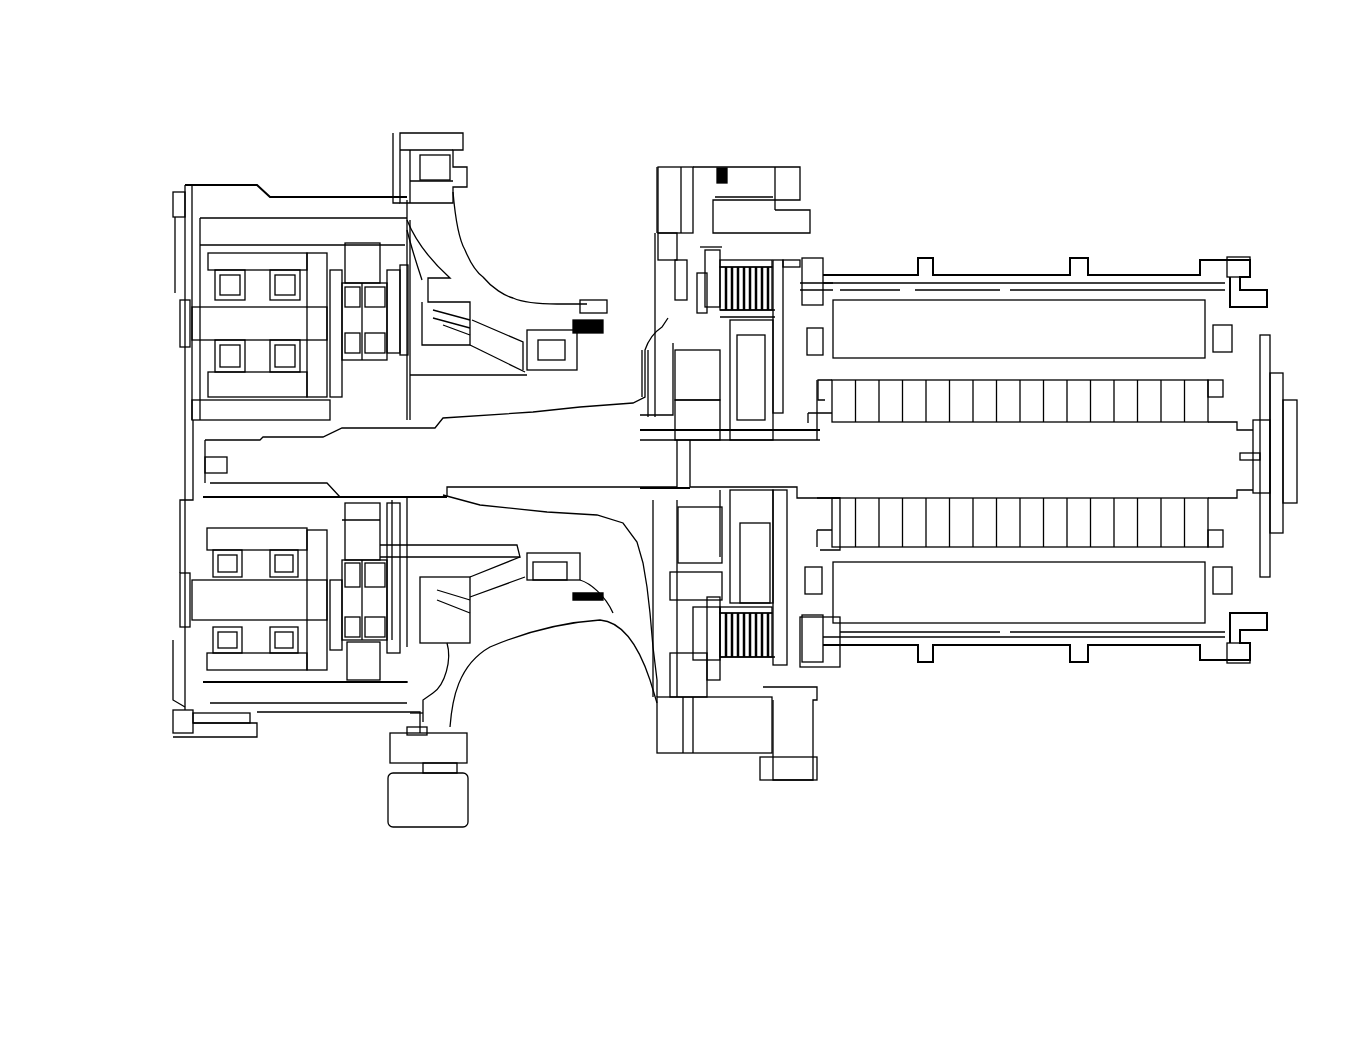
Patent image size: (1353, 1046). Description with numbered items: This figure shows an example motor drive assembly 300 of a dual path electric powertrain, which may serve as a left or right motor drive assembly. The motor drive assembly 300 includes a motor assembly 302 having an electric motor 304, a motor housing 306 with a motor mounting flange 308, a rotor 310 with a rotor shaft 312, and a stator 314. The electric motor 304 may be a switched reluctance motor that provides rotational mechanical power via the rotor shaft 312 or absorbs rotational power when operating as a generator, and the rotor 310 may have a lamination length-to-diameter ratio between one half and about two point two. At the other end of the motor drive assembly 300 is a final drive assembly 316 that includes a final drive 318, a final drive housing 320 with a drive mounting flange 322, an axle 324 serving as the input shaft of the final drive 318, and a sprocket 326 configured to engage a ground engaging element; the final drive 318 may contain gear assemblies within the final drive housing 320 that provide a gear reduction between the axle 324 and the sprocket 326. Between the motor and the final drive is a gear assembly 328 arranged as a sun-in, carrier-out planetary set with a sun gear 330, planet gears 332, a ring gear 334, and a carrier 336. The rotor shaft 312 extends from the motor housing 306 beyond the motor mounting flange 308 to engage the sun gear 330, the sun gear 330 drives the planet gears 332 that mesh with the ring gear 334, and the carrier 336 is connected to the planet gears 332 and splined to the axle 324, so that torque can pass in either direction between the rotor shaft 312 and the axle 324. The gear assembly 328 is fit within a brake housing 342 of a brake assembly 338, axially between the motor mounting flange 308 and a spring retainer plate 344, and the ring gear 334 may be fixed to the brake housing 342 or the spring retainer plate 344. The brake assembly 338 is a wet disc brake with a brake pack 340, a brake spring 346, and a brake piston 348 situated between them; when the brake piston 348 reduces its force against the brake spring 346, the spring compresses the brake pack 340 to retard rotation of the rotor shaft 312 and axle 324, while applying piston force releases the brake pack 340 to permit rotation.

The motor drive assembly 300 is at (175, 83).
The motor assembly 302 is at (772, 797).
The electric motor 304 is at (1150, 250).
The motor housing 306 is at (1047, 275).
The motor mounting flange 308 is at (797, 192).
The rotor 310 is at (1250, 385).
The rotor shaft 312 is at (1030, 465).
The stator 314 is at (1019, 461).
The final drive assembly 316 is at (175, 137).
The final drive 318 is at (150, 692).
The final drive housing 320 is at (293, 723).
The drive mounting flange 322 is at (668, 757).
The axle 324 is at (441, 507).
The sprocket 326 is at (405, 812).
The gear assembly 328 is at (752, 368).
The sun gear 330 is at (703, 495).
The planet gears 332 is at (702, 360).
The ring gear 334 is at (703, 337).
The carrier 336 is at (665, 500).
The brake assembly 338 is at (683, 140).
The brake pack 340 is at (740, 675).
The brake housing 342 is at (757, 181).
The spring retainer plate 344 is at (684, 755).
The brake spring 346 is at (705, 307).
The brake piston 348 is at (707, 257).